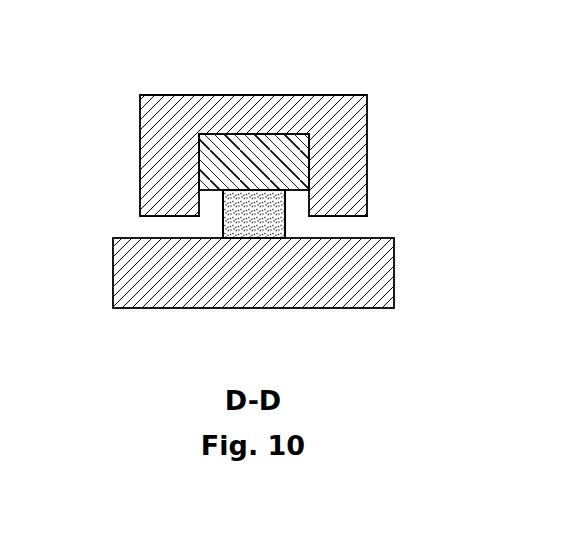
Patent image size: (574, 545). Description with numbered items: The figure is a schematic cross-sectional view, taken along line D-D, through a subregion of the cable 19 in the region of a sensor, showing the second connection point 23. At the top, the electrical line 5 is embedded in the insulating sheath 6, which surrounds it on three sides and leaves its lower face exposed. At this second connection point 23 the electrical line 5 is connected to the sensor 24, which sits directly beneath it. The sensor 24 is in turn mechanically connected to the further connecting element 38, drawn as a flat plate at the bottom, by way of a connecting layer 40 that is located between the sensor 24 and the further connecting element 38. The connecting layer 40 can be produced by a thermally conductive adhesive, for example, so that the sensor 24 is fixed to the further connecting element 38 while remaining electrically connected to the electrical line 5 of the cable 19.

The second connection point 23 is at (385, 71).
The insulating sheath 6 is at (157, 133).
The electrical line 5 is at (272, 155).
The connecting layer 40 is at (235, 239).
The sensor 24 is at (277, 225).
The cable 19 is at (92, 233).
The further connecting element 38 is at (377, 275).